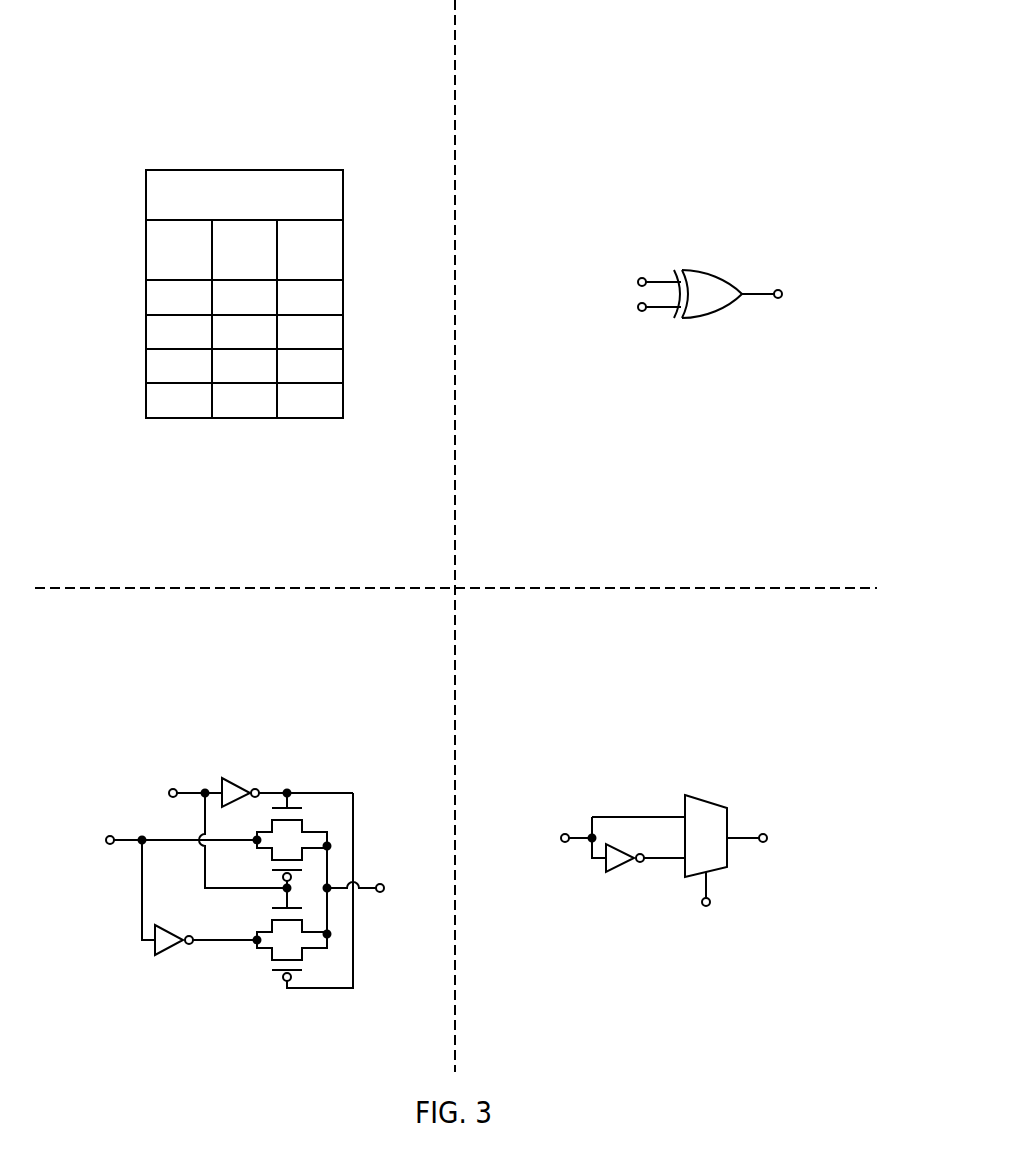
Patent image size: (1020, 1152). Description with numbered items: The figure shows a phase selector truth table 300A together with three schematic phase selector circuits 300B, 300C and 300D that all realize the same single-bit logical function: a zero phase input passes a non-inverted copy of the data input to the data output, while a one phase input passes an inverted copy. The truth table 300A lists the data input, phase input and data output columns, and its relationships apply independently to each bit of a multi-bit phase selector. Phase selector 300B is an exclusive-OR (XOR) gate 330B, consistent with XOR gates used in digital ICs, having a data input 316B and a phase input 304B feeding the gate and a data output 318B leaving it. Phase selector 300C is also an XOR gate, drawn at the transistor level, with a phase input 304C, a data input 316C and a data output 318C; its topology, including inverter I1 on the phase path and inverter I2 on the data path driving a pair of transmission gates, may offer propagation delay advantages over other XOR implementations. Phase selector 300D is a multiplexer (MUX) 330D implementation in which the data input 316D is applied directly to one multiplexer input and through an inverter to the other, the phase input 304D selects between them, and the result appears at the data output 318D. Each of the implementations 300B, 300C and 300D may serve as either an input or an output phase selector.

The phase selector truth table 300A is at (197, 210).
The phase selector 300B is at (657, 166).
The phase selector 300C is at (246, 793).
The phase selector 300D is at (656, 790).
The data input 316B is at (584, 280).
The phase input 304B is at (580, 305).
The exclusive-OR (XOR) gate 330B is at (690, 267).
The data output 318B is at (792, 293).
The phase input 304C is at (175, 829).
The data input 316C is at (157, 884).
The data output 318C is at (382, 886).
The inverter I1 is at (225, 781).
The inverter I2 is at (160, 928).
The data input 316D is at (598, 836).
The multiplexer (MUX) 330D is at (688, 795).
The data output 318D is at (777, 836).
The phase input 304D is at (706, 927).